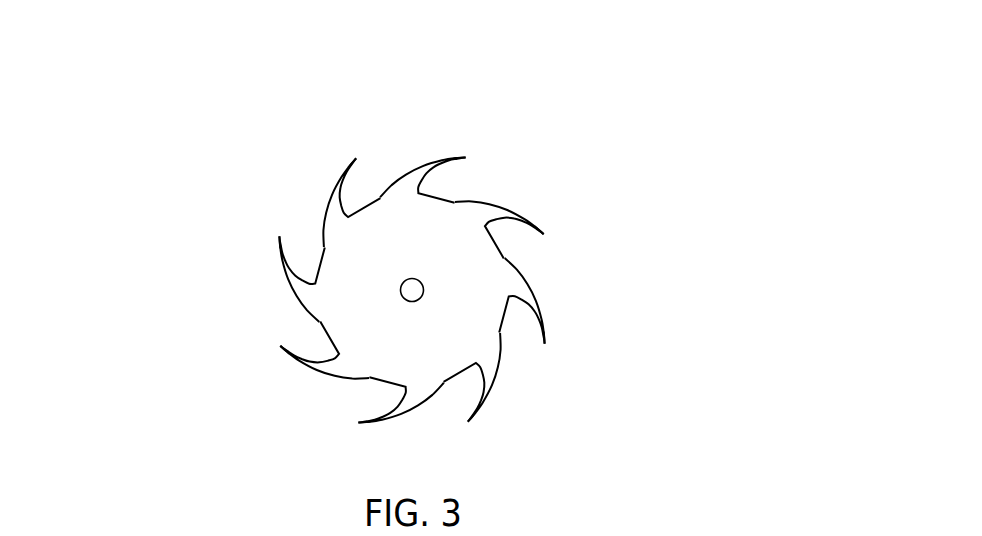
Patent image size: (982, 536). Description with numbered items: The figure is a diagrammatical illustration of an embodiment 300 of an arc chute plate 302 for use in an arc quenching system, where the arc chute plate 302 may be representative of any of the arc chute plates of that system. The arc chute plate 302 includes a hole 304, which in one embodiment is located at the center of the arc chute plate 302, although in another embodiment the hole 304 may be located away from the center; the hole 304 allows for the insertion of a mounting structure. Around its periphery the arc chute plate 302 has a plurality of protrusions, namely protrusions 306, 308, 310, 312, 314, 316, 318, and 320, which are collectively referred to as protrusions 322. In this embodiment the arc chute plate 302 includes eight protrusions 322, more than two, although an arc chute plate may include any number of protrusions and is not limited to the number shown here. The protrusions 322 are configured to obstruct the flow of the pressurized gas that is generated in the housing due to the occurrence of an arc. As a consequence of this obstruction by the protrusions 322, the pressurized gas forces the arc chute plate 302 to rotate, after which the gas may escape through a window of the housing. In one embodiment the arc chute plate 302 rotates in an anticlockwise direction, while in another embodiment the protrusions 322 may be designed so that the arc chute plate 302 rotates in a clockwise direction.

The embodiment of arc chute plate 300 is at (612, 62).
The arc chute plate 302 is at (447, 200).
The hole 304 is at (412, 302).
The protrusion 306 is at (518, 208).
The protrusion 308 is at (540, 291).
The protrusion 310 is at (502, 378).
The protrusion 312 is at (413, 417).
The protrusion 314 is at (318, 377).
The protrusion 316 is at (285, 294).
The protrusion 318 is at (327, 191).
The protrusion 320 is at (418, 157).
The protrusions 322 is at (405, 120).